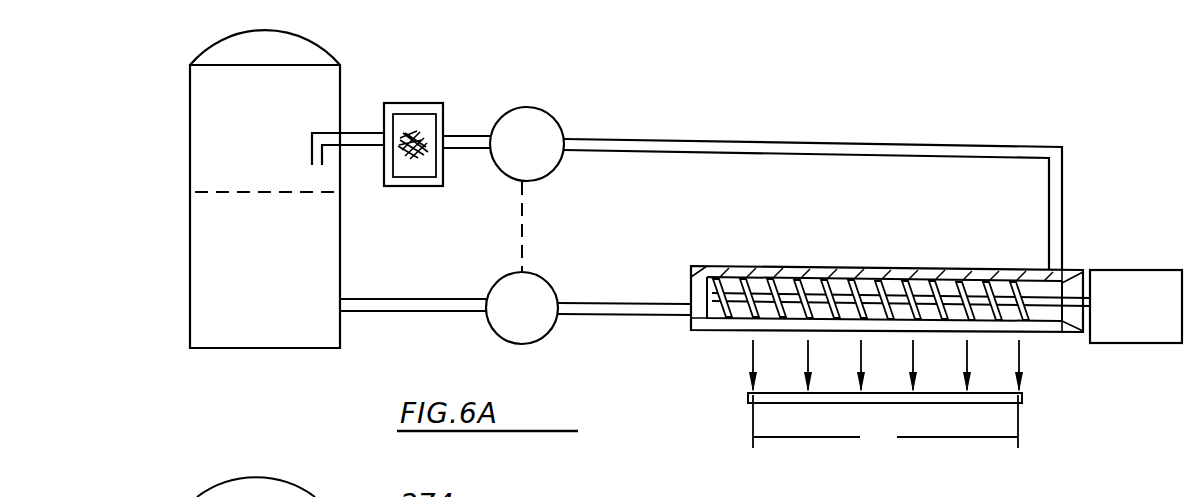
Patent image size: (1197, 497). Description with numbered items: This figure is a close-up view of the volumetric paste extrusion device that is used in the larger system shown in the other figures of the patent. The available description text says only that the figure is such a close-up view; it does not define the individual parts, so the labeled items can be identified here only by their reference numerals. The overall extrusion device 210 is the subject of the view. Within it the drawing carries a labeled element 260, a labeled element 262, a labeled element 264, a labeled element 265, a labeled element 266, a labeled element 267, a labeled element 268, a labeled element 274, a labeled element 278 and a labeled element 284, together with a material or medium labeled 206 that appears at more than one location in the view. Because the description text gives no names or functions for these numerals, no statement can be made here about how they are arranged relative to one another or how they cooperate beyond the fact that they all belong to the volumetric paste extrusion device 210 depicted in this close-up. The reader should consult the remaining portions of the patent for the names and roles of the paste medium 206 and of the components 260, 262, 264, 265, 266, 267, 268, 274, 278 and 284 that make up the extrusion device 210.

The polymer material 206 is at (220, 192).
The extrusion system 210 is at (956, 114).
The storage tank 260 is at (190, 296).
The extruder 262 is at (690, 320).
The motor 264 is at (1150, 270).
The feed line 265 is at (392, 298).
The pump 266 is at (540, 280).
The return line 267 is at (710, 138).
The pump 268 is at (548, 115).
The filter 274 is at (407, 103).
The web 278 is at (812, 402).
The screw 284 is at (785, 330).